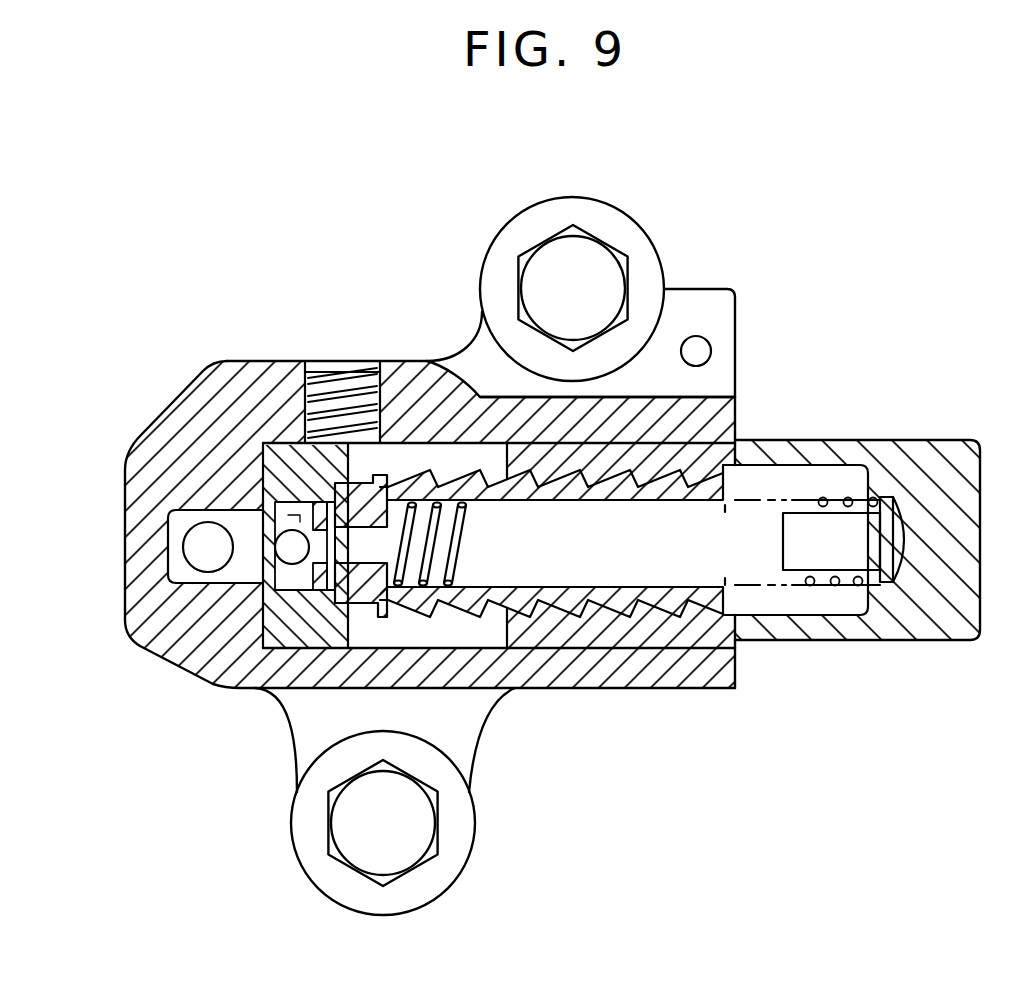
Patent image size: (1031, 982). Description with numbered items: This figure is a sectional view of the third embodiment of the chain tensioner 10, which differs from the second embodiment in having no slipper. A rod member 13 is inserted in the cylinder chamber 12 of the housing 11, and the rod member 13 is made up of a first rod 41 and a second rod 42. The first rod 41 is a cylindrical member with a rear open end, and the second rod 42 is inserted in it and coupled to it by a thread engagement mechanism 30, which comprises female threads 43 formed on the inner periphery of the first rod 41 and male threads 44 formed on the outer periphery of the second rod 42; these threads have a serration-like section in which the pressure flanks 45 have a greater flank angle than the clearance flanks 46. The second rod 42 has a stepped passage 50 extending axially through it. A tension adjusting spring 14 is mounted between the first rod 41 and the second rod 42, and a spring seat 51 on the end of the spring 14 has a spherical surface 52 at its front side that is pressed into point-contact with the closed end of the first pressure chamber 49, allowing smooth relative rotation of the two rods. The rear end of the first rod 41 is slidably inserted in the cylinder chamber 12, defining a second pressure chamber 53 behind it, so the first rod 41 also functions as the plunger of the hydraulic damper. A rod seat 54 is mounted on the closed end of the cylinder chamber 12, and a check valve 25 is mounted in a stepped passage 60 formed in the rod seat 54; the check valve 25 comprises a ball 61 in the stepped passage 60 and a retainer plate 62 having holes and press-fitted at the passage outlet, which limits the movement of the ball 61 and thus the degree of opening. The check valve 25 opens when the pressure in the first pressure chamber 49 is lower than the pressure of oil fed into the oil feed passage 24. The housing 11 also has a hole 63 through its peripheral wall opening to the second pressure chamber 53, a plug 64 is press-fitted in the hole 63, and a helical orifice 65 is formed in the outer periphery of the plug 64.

The tensioner 10 is at (118, 470).
The housing 11 is at (182, 398).
The cylinder chamber 12 is at (735, 393).
The rod member 13 is at (815, 437).
The tension adjusting spring 14 is at (810, 583).
The oil feed passage 24 is at (177, 558).
The check valve 25 is at (262, 540).
The thread engagement mechanism 30 is at (550, 617).
The first rod 41 is at (942, 465).
The second rod 42 is at (612, 465).
The female threads 43 is at (535, 468).
The male threads 44 is at (565, 468).
The pressure flanks 45 is at (537, 613).
The clearance flanks 46 is at (567, 612).
The first pressure chamber 49 is at (758, 603).
The stepped passage 50 is at (362, 600).
The spring seat 51 is at (867, 550).
The spherical surface 52 is at (920, 545).
The second pressure chamber 53 is at (462, 457).
The rod seat 54 is at (258, 455).
The stepped passage 60 is at (306, 530).
The ball 61 is at (285, 563).
The retainer plate 62 is at (313, 593).
The hole 63 is at (320, 360).
The plug 64 is at (338, 377).
The helical orifice 65 is at (363, 367).